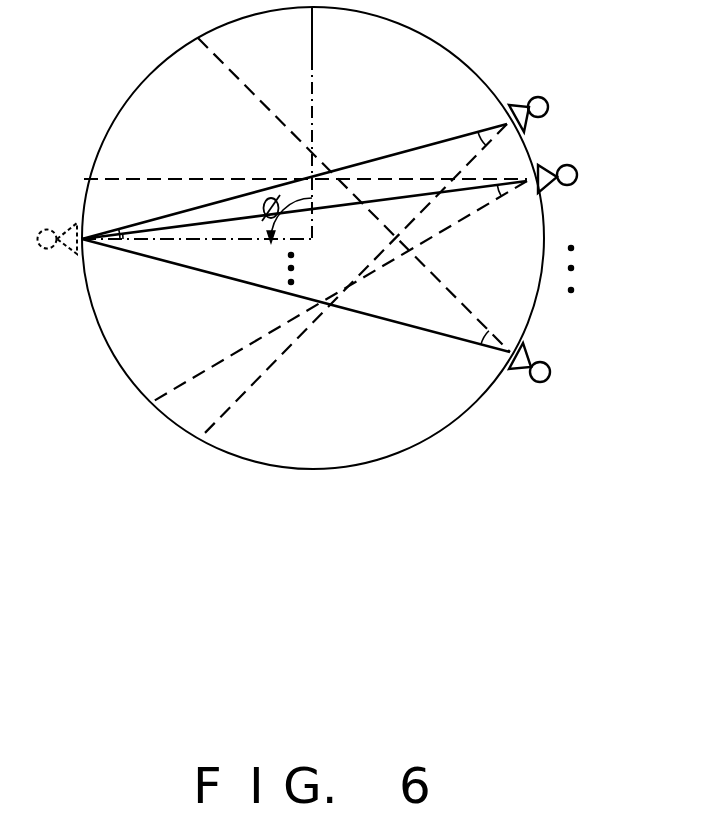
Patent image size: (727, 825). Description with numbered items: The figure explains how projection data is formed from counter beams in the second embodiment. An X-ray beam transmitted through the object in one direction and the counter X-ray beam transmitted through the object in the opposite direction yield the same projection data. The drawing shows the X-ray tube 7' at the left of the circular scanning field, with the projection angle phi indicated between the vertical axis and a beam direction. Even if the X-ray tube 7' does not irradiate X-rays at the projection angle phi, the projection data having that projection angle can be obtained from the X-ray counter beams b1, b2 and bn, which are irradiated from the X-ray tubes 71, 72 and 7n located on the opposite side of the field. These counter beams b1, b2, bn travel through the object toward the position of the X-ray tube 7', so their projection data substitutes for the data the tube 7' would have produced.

The X-ray tube 7' is at (56, 269).
The X-ray tube 71 is at (548, 104).
The X-ray tube 72 is at (575, 183).
The X-ray tube 7n is at (546, 381).
The X-ray counter beam b1 is at (390, 152).
The X-ray counter beam b2 is at (345, 211).
The X-ray counter beam bn is at (384, 324).